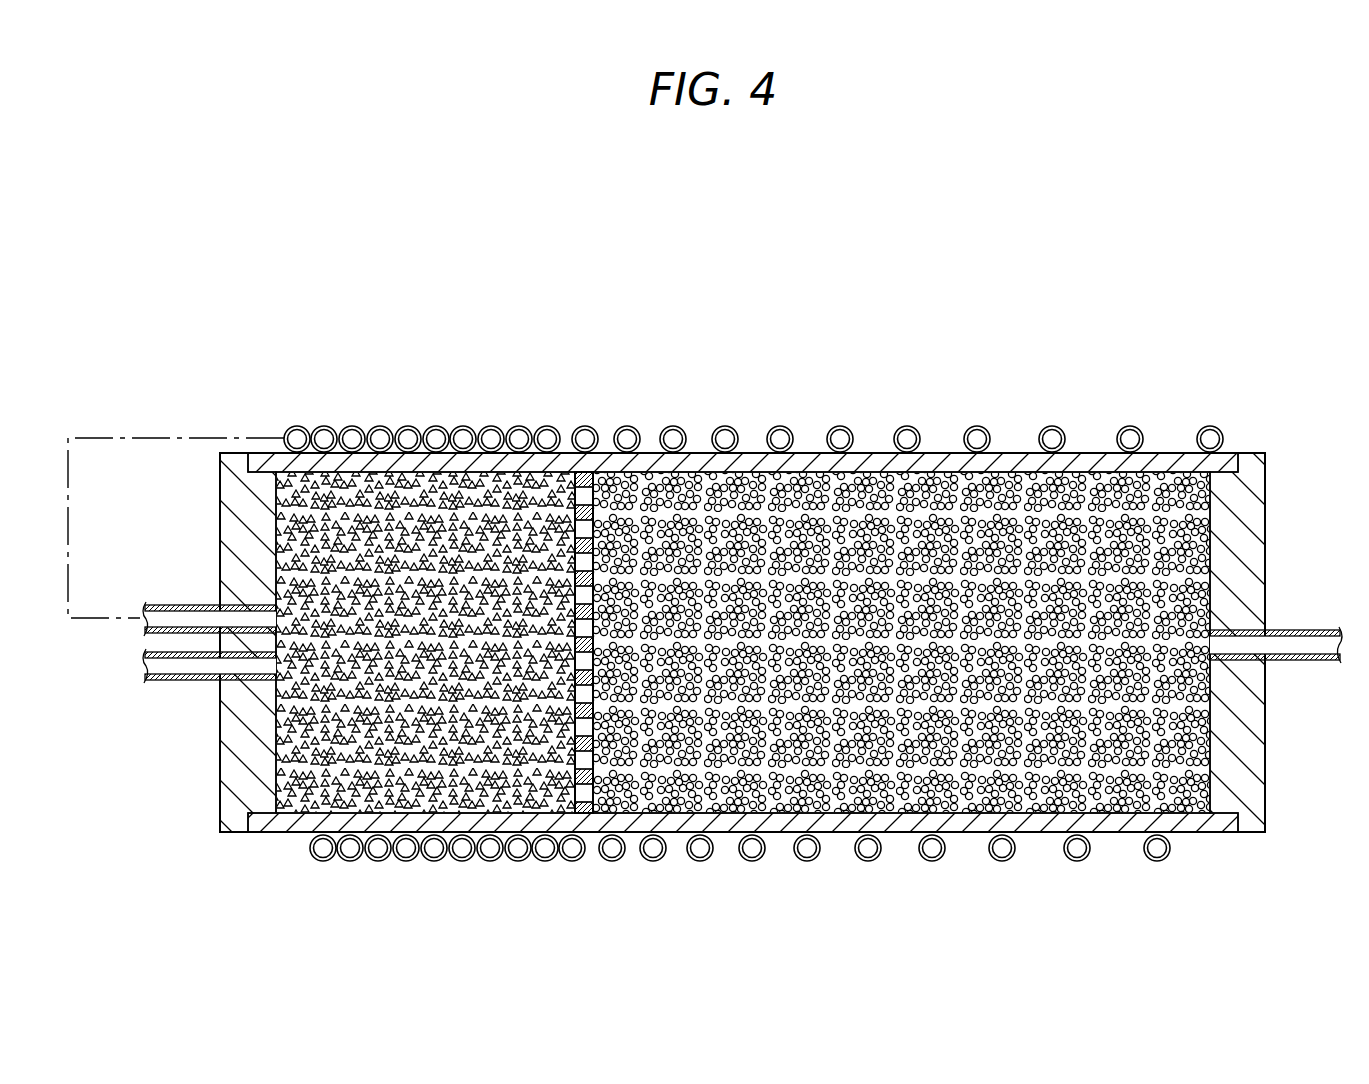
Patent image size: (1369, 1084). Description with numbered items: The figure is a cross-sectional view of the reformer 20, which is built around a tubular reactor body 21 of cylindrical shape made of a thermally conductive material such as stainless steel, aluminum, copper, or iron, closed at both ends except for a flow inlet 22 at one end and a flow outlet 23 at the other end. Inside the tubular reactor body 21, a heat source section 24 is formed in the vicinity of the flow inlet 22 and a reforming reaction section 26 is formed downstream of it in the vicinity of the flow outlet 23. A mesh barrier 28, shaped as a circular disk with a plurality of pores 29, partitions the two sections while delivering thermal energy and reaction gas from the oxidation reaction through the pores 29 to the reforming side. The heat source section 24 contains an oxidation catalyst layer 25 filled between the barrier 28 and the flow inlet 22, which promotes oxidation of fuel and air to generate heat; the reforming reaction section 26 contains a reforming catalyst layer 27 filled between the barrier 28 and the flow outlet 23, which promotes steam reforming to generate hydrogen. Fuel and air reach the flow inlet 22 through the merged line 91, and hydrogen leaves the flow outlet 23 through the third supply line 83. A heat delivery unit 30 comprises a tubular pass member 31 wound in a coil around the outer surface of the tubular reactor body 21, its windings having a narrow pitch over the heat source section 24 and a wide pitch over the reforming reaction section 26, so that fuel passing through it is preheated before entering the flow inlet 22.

The reformer 20 is at (630, 287).
The tubular reactor body 21 is at (755, 469).
The flow inlet 22 is at (242, 505).
The flow outlet 23 is at (1245, 550).
The heat source section 24 is at (433, 460).
The oxidation catalyst layer 25 is at (488, 495).
The reforming reaction section 26 is at (872, 465).
The reforming catalyst layer 27 is at (930, 495).
The barrier 28 is at (585, 815).
The pores 29 is at (570, 765).
The heat delivery unit 30 is at (352, 412).
The pass member 31 is at (293, 425).
The third supply line 83 is at (1303, 662).
The merged line 91 is at (186, 682).